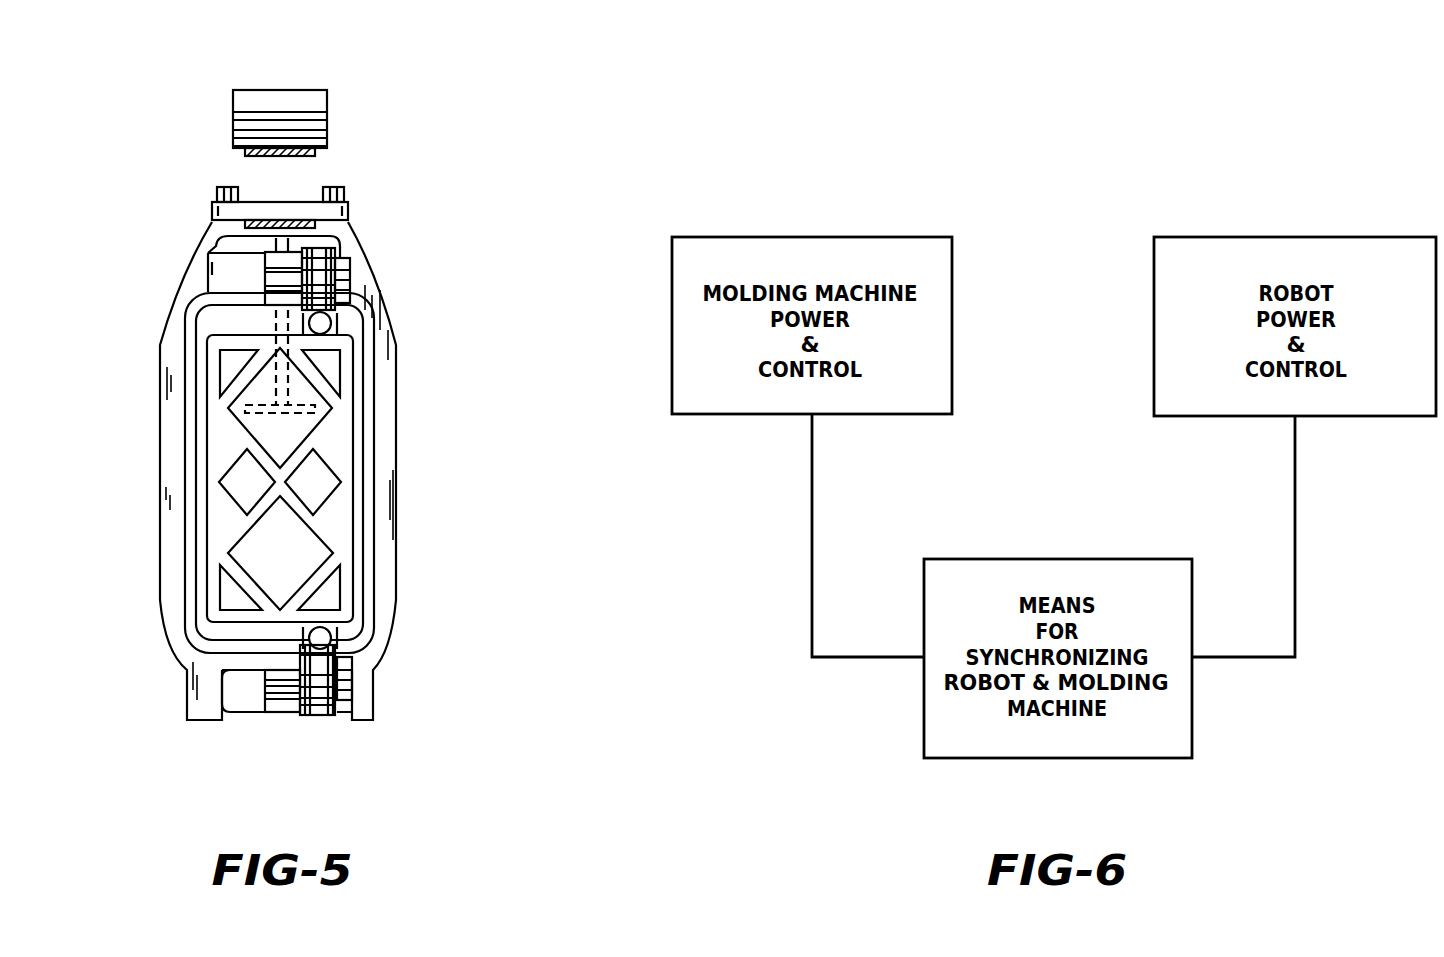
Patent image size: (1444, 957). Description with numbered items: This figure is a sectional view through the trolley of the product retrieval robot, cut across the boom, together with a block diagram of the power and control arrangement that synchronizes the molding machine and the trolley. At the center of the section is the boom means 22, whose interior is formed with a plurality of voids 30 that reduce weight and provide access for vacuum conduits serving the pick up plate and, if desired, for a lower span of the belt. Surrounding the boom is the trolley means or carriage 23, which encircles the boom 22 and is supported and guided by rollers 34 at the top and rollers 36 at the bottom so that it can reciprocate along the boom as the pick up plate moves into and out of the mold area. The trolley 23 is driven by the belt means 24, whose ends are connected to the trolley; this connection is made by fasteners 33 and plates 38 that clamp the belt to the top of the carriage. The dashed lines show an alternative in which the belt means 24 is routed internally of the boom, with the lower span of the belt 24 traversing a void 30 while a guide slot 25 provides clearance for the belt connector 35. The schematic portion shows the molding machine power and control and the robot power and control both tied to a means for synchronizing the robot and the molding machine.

The boom means 22 is at (333, 540).
The trolley means or carriage 23 is at (362, 280).
The belt means 24 is at (283, 150).
The guide slot 25 is at (268, 332).
The voids 30 is at (290, 427).
The fasteners 33 is at (228, 188).
The rollers 34 is at (333, 240).
The belt connector 35 is at (273, 243).
The rollers 36 is at (322, 710).
The plates 38 is at (295, 200).